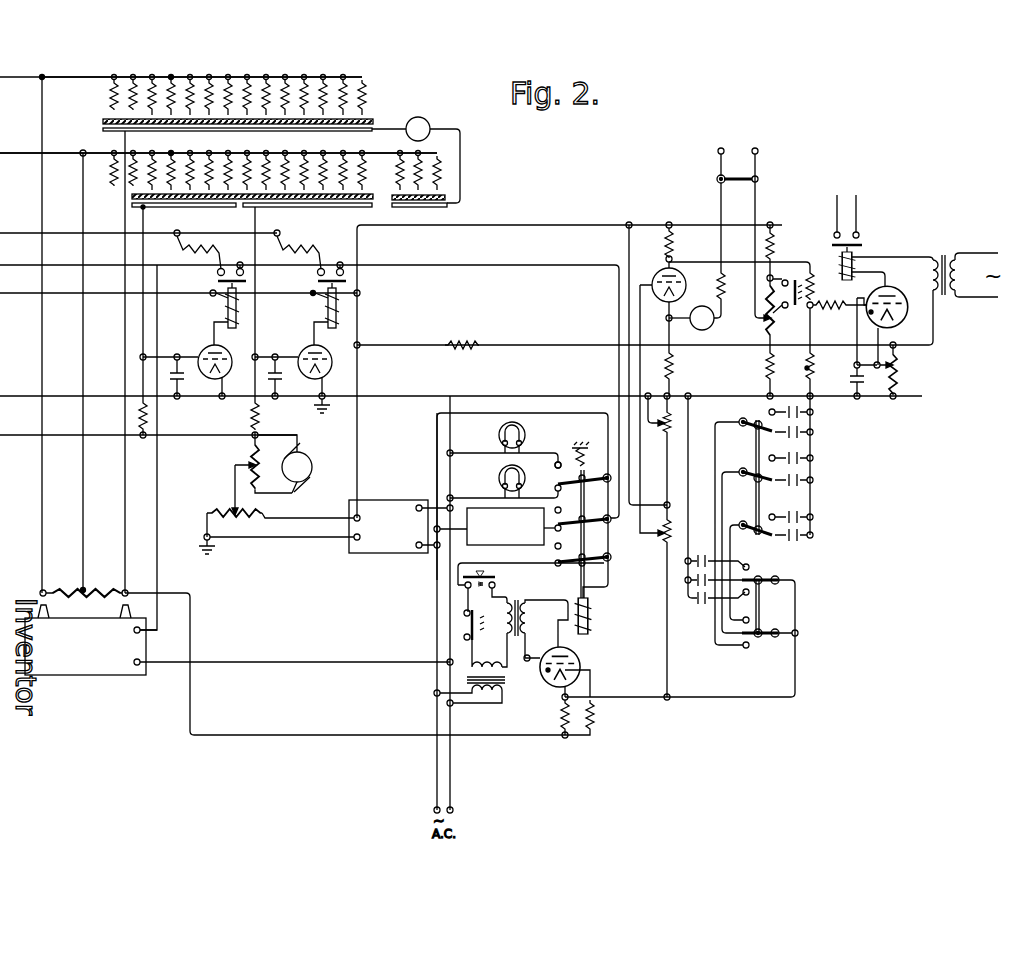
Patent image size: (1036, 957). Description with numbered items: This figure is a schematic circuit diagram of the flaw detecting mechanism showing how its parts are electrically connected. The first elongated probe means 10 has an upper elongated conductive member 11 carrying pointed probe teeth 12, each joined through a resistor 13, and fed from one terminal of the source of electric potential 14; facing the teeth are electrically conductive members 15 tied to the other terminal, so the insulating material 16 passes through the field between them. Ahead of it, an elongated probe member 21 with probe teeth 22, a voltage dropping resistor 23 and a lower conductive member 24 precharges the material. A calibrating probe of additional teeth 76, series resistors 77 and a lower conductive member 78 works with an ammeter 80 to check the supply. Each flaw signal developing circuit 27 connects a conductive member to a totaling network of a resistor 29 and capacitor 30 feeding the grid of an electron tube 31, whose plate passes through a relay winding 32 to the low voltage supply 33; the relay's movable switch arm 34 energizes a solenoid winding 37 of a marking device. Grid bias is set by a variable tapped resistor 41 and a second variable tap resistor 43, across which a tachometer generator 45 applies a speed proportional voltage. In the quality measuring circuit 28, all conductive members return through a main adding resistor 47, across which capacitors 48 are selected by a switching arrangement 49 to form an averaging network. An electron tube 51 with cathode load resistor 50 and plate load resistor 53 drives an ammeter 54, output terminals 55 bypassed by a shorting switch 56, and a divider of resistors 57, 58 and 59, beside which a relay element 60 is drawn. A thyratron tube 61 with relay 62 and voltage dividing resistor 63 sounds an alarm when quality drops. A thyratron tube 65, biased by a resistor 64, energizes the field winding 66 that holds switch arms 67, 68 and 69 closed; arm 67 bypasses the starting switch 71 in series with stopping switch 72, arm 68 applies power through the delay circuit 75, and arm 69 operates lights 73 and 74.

The first elongated probe means 10 is at (244, 160).
The upper elongated conductive member 11 is at (83, 150).
The pointed probe teeth 12 is at (152, 183).
The resistors 13 is at (365, 165).
The source of electric potential 14 is at (148, 643).
The electrically conductive members 15 is at (203, 207).
The insulating material 16 is at (104, 118).
The elongated probe member 21 is at (336, 77).
The pointed probe teeth 22 is at (365, 110).
The voltage dropping resistor 23 is at (366, 90).
The lower conductive member 24 is at (300, 131).
The flaw indicating signal developing circuits 27 is at (261, 321).
The quality measuring circuit 28 is at (812, 399).
The resistor 29 is at (146, 418).
The capacitor 30 is at (181, 386).
The electron tube 31 is at (229, 357).
The relay winding 32 is at (228, 307).
The source of direct current plate potential 33 is at (394, 500).
The movable switch arm 34 is at (217, 274).
The solenoid winding 37 is at (215, 249).
The variable tapped resistor 41 is at (213, 512).
The second variable tap resistor 43 is at (250, 450).
The tachometer generator 45 is at (313, 457).
The main adding resistor 47 is at (666, 480).
The capacitors 48 is at (800, 455).
The selective switching arrangement 49 is at (752, 415).
The load resistor 50 is at (673, 368).
The electron tube 51 is at (658, 281).
The load resistor 53 is at (675, 239).
The ammeter 54 is at (715, 327).
The output terminals 55 is at (717, 153).
The shorting switch 56 is at (733, 183).
The resistor 57 is at (774, 239).
The resistor 58 is at (765, 293).
The resistor 59 is at (767, 368).
The relay contacts 60 is at (789, 308).
The thyratron tube 61 is at (893, 291).
The relay 62 is at (842, 259).
The voltage dividing resistor 63 is at (898, 357).
The resistor 64 is at (562, 715).
The thyratron tube 65 is at (581, 656).
The field winding 66 is at (593, 610).
The movable switch arm 67 is at (596, 553).
The movable switch arm 68 is at (596, 515).
The movable switch arm 69 is at (596, 475).
The starting switch 71 is at (497, 577).
The stopping switch 72 is at (475, 641).
The on-off light 73 is at (526, 431).
The on-off light 74 is at (525, 474).
The delay circuit 75 is at (495, 546).
The additional teeth 76 is at (441, 196).
The series resistors 77 is at (440, 163).
The lower conductive member 78 is at (446, 207).
The ammeter 80 is at (428, 123).